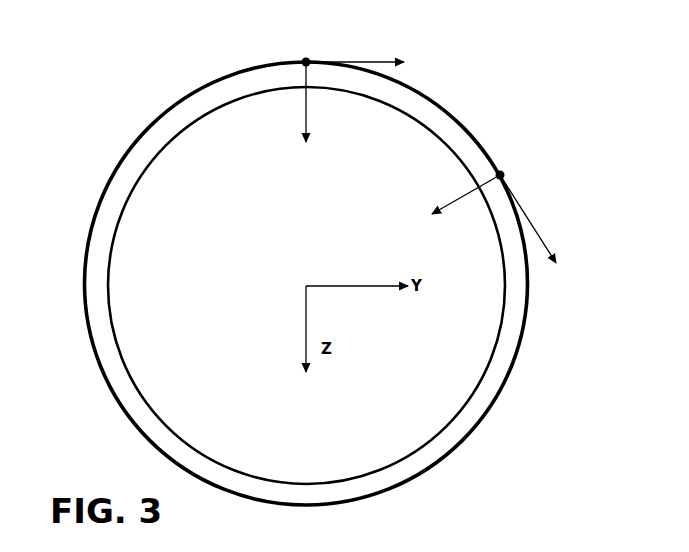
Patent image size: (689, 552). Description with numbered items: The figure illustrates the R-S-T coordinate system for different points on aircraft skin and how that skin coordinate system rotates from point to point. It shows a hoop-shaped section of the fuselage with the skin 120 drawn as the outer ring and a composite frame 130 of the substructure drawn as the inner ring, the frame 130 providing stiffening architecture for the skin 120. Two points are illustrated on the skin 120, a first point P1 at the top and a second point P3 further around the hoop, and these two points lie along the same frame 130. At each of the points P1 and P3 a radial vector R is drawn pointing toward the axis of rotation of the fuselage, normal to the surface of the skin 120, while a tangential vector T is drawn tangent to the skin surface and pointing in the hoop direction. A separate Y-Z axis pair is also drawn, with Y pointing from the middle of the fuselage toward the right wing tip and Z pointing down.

The skin 120 is at (127, 152).
The composite frame 130 is at (125, 208).
The point P1 is at (343, 91).
The point P3 is at (495, 223).